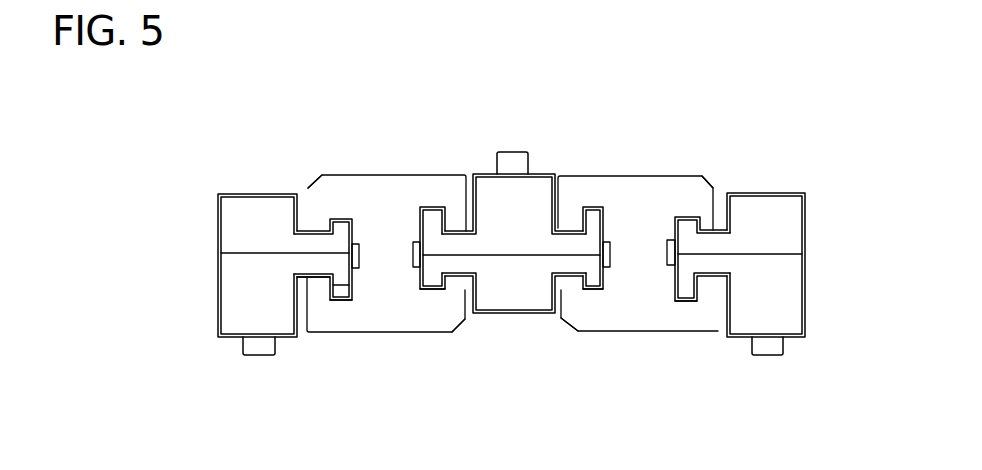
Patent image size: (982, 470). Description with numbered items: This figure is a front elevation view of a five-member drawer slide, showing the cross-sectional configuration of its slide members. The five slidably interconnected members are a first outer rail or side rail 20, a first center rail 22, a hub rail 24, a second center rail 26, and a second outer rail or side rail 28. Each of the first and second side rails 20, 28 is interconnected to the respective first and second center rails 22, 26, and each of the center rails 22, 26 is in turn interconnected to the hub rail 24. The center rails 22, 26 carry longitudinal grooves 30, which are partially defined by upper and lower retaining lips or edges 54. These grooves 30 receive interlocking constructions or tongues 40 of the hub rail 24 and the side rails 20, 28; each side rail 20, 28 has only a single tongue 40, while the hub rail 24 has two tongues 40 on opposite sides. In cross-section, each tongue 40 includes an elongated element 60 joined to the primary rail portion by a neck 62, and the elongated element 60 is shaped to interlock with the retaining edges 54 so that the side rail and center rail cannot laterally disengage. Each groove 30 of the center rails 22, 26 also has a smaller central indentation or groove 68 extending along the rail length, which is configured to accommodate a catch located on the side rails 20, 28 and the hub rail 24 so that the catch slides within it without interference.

The first outer rail or side rail 20 is at (245, 193).
The first center rail 22 is at (384, 175).
The hub rail 24 is at (544, 173).
The second center rail 26 is at (645, 176).
The second outer rail or side rail 28 is at (775, 193).
The longitudinal grooves 30 is at (422, 290).
The interlocking constructions or tongues 40 is at (340, 218).
The upper and lower retaining lips or edges 54 is at (313, 210).
The elongated element 60 is at (340, 272).
The neck 62 is at (318, 276).
The smaller central indentation or groove 68 is at (415, 253).